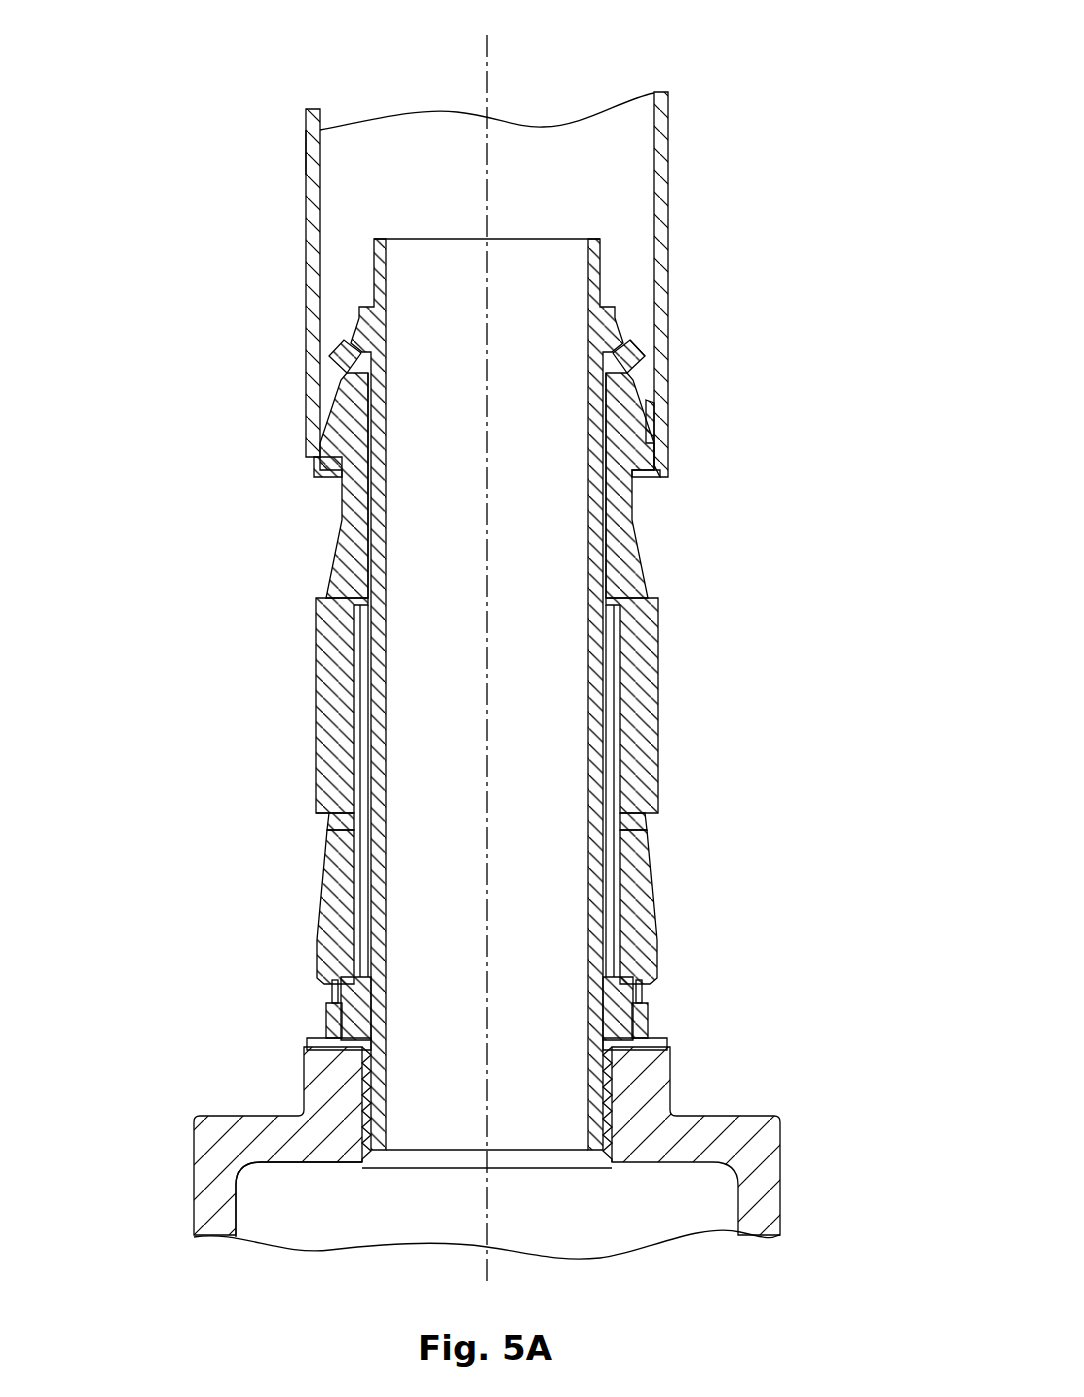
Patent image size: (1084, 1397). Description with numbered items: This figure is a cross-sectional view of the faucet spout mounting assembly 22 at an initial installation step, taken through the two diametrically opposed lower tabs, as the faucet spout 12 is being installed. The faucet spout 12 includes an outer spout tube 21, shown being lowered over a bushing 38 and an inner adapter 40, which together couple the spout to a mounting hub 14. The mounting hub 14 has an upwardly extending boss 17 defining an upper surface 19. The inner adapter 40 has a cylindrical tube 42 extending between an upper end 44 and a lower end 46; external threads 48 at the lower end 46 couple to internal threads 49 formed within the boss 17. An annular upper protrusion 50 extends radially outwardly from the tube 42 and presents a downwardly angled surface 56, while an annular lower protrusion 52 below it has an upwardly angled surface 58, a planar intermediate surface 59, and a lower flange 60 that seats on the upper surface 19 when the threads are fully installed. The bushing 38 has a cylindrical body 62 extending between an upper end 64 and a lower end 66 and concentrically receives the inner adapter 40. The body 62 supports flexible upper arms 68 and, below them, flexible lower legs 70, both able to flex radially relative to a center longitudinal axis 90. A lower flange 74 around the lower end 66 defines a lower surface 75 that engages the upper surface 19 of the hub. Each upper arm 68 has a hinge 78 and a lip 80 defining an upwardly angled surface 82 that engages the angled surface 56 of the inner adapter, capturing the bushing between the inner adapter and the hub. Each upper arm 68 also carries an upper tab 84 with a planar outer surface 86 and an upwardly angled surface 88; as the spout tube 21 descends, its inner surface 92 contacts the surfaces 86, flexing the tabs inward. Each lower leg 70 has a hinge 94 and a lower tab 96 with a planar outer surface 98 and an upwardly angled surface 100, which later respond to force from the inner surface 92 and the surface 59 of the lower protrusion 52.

The faucet spout 12 is at (668, 130).
The mounting hub 14 is at (194, 1180).
The boss 17 is at (320, 1080).
The upper surface 19 is at (315, 1042).
The outer spout tube 21 is at (307, 185).
The faucet spout mounting assembly 22 is at (860, 133).
The bushing 38 is at (303, 680).
The inner adapter 40 is at (395, 1168).
The cylindrical tube 42 is at (378, 238).
The upper end 44 is at (603, 233).
The lower end 46 is at (343, 1182).
The external threads 48 is at (642, 1097).
The internal threads 49 is at (588, 1152).
The upper protrusion 50 is at (345, 335).
The lower protrusion 52 is at (335, 935).
The downwardly angled surface 56 is at (330, 378).
The upwardly angled surface 58 is at (358, 880).
The planar intermediate surface 59 is at (333, 970).
The lower flange 60 is at (330, 1000).
The cylindrical body 62 is at (660, 620).
The upper end 64 is at (696, 364).
The lower end 66 is at (672, 1018).
The upper arms 68 is at (656, 402).
The lower legs 70 is at (647, 847).
The lower flange 74 is at (642, 1023).
The lower surface 75 is at (660, 1043).
The hinge 78 is at (640, 518).
The lip 80 is at (648, 345).
The upwardly angled surface 82 is at (634, 315).
The upper tab 84 is at (662, 472).
The planar outer surface 86 is at (333, 472).
The upwardly angled surface 88 is at (652, 418).
The center longitudinal axis 90 is at (487, 38).
The inner surface 92 is at (320, 148).
The hinge 94 is at (328, 815).
The lower tab 96 is at (657, 912).
The planar outer surface 98 is at (659, 950).
The upwardly angled surface 100 is at (647, 878).